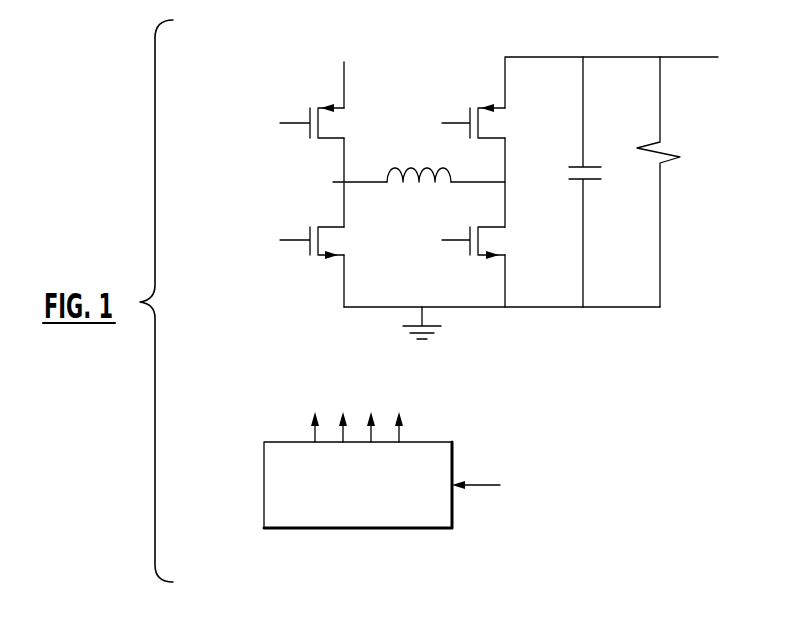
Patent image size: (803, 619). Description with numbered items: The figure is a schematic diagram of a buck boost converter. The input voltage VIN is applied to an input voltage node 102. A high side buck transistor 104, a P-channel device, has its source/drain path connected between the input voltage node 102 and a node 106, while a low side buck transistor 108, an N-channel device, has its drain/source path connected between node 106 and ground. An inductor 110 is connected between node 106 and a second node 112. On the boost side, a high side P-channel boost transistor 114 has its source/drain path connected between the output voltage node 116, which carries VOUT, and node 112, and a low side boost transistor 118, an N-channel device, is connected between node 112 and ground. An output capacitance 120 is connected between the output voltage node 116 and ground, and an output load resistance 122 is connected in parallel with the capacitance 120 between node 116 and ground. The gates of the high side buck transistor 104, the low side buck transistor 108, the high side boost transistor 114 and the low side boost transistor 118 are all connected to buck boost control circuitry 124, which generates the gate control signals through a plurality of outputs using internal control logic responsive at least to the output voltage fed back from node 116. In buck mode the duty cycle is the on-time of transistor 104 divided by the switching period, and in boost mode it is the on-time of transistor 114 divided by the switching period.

The input voltage node 102 is at (341, 70).
The high side buck transistor 104 is at (343, 125).
The node 106 is at (333, 182).
The low side buck transistor 108 is at (337, 240).
The inductor 110 is at (430, 168).
The node 112 is at (505, 182).
The high side P-channel boost transistor 114 is at (497, 125).
The output voltage node 116 is at (505, 57).
The low side boost transistor 118 is at (500, 237).
The output capacitance 120 is at (595, 185).
The output load resistance 122 is at (668, 166).
The buck boost control circuitry 124 is at (350, 528).